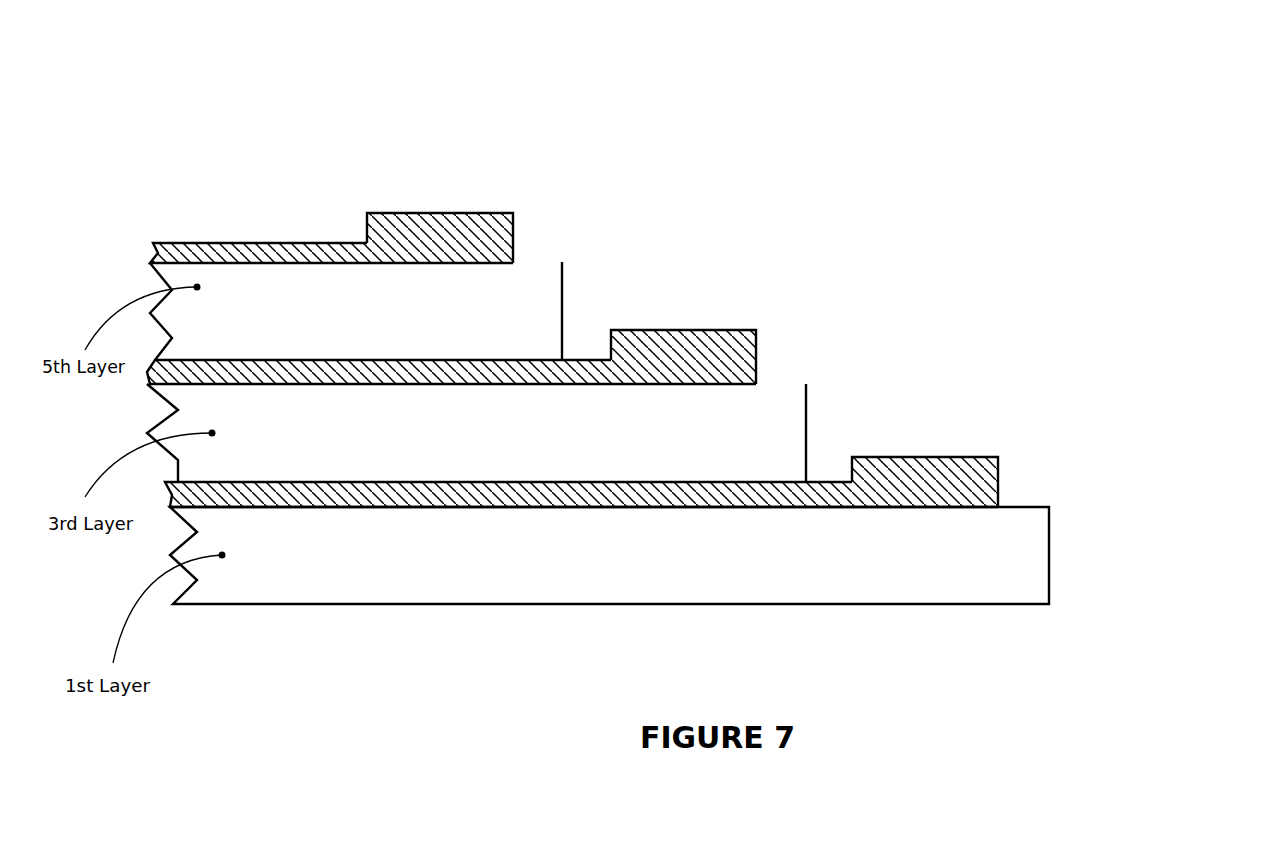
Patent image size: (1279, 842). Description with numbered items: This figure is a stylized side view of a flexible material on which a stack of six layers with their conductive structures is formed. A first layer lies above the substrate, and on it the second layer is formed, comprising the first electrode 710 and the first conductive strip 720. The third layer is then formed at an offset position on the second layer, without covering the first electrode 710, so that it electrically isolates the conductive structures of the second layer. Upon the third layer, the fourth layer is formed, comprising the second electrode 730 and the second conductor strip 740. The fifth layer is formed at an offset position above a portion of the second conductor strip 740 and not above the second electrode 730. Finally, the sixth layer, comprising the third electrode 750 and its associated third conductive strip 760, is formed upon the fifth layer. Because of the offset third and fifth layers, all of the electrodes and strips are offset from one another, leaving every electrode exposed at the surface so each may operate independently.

The first electrode 710 is at (878, 457).
The first conductive strip 720 is at (821, 482).
The second electrode 730 is at (699, 330).
The second conductor strip 740 is at (587, 359).
The third electrode 750 is at (441, 213).
The third conductive strip 760 is at (261, 243).